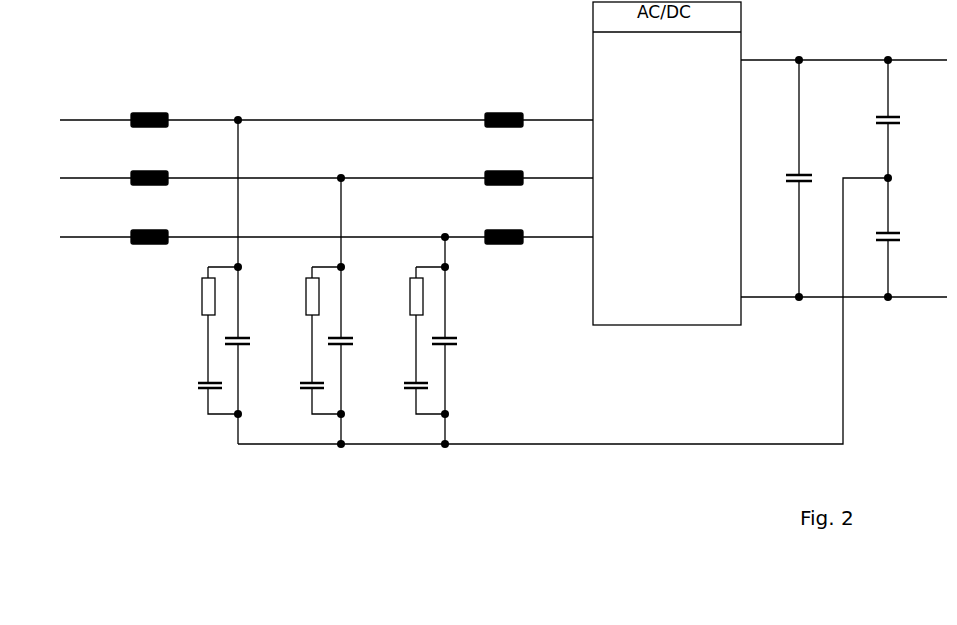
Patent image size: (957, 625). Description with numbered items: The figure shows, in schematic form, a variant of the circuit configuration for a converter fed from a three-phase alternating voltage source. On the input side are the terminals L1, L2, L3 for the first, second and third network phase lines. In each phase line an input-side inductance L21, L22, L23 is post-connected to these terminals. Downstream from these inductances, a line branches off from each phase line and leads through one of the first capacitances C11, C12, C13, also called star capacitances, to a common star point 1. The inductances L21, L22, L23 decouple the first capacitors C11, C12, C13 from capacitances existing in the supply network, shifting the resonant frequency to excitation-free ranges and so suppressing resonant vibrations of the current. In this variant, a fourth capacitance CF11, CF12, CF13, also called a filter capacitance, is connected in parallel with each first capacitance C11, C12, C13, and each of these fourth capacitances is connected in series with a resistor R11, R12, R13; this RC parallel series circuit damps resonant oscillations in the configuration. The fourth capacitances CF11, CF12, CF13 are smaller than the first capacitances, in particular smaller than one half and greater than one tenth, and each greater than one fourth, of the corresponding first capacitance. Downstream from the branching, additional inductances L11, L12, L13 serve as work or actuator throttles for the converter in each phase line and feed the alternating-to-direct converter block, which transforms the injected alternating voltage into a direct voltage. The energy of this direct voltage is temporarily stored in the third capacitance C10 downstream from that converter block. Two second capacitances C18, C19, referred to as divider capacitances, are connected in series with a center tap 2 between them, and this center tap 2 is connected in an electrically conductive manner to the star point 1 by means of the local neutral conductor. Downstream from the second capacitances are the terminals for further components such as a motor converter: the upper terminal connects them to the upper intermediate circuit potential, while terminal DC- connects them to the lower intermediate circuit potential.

The input terminal for first network phase line L1 is at (326, 107).
The input terminal for second network phase line L2 is at (326, 165).
The input terminal for third network phase line L3 is at (326, 224).
The input-side inductance L21 is at (149, 106).
The input-side inductance L22 is at (149, 165).
The input-side inductance L23 is at (149, 227).
The additional inductance (work throttle) L11 is at (504, 106).
The additional inductance (work throttle) L12 is at (504, 165).
The additional inductance (work throttle) L13 is at (504, 227).
The resistor R11 is at (201, 325).
The resistor R12 is at (304, 325).
The resistor R13 is at (408, 325).
The first capacitance (star capacitance) C11 is at (258, 341).
The first capacitance (star capacitance) C12 is at (362, 341).
The first capacitance (star capacitance) C13 is at (466, 341).
The fourth capacitance (filter capacitance) CF11 is at (196, 394).
The fourth capacitance (filter capacitance) CF12 is at (299, 394).
The fourth capacitance (filter capacitance) CF13 is at (403, 394).
The third capacitance C10 is at (816, 178).
The second capacitance (divider capacitance) C18 is at (910, 119).
The second capacitance (divider capacitance) C19 is at (910, 237).
The common star point 1 is at (563, 329).
The center tap 2 is at (897, 179).
The terminal DC− DC- is at (844, 284).